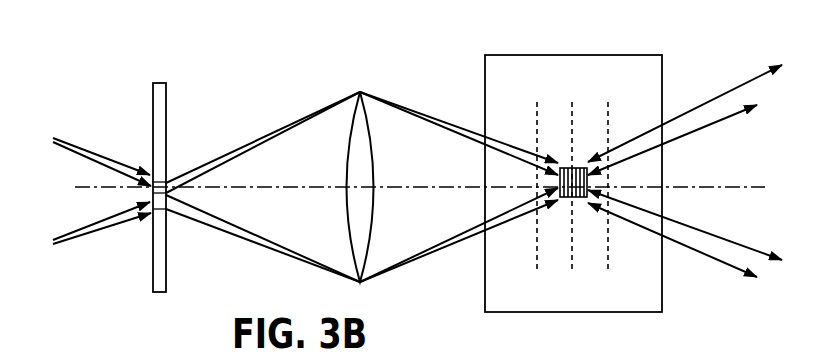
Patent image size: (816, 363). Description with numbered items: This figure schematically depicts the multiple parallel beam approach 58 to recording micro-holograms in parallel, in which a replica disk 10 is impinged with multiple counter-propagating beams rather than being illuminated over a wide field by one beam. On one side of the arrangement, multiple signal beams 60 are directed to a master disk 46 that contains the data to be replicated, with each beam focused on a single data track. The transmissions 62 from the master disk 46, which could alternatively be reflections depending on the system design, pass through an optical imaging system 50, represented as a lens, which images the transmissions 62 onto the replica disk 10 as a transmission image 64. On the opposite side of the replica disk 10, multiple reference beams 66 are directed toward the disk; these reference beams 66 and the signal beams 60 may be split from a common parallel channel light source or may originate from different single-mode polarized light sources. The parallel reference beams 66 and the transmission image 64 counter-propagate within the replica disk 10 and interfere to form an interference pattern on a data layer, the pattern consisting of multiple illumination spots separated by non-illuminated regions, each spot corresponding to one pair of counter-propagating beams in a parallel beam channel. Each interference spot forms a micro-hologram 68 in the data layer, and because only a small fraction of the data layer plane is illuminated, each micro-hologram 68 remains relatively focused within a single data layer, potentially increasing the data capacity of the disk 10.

The replica disk 10 is at (662, 262).
The master disk 46 is at (167, 233).
The optical imaging system 50 is at (360, 92).
The multiple parallel beam approach 58 is at (677, 83).
The signal beams 60 is at (88, 150).
The transmissions 62 is at (252, 140).
The transmission image 64 is at (423, 112).
The reference beams 66 is at (728, 238).
The micro-hologram 68 is at (569, 198).